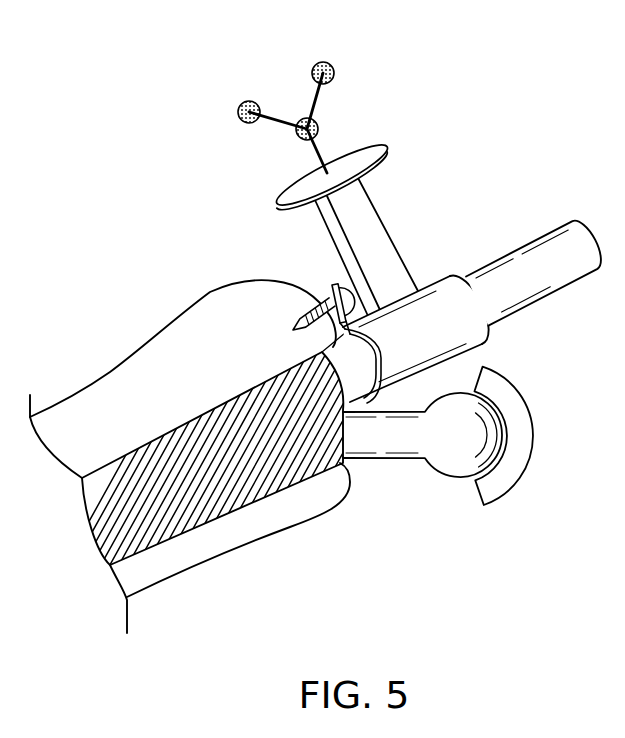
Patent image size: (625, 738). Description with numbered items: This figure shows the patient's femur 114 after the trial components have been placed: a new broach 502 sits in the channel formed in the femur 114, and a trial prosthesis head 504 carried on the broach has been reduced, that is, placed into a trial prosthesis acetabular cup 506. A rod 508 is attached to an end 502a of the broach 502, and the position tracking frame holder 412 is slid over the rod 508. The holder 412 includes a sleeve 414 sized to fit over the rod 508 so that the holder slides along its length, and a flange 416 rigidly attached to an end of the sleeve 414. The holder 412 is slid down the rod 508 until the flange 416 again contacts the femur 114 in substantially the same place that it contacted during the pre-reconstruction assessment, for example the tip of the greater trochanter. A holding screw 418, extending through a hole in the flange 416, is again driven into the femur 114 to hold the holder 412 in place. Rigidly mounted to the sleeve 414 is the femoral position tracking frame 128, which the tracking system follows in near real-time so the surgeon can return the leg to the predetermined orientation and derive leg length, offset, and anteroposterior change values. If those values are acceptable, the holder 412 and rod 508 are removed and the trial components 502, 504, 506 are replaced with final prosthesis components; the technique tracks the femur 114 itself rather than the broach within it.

The femur 114 is at (67, 394).
The femoral position tracking frame 128 is at (340, 115).
The position tracking frame holder 412 is at (423, 270).
The sleeve 414 is at (476, 352).
The flange 416 is at (333, 288).
The holding screw 418 is at (308, 305).
The broach 502 is at (167, 425).
The end of the broach 502a is at (322, 346).
The trial prosthesis head 504 is at (392, 459).
The trial prosthesis acetabular cup 506 is at (509, 491).
The rod 508 is at (547, 233).